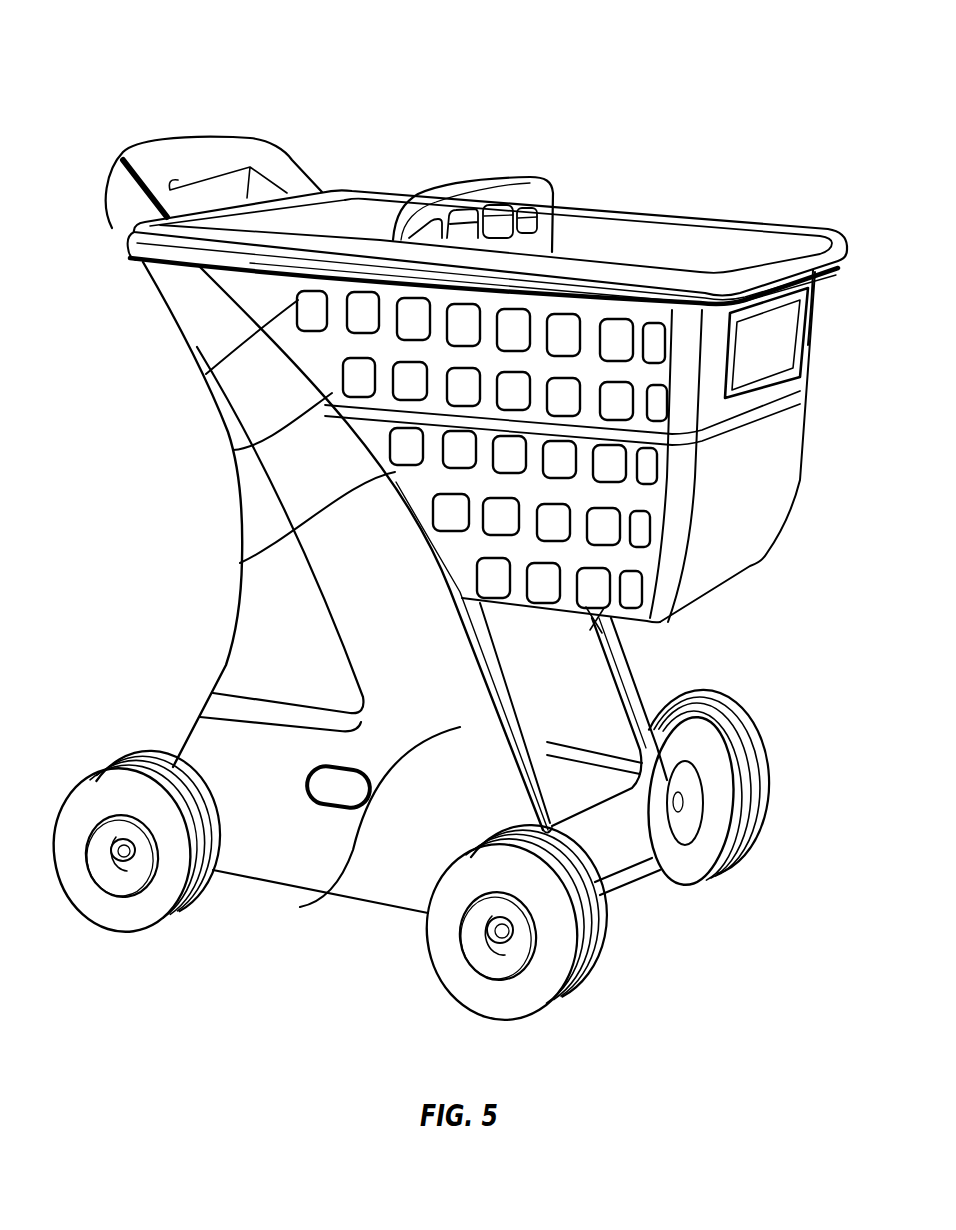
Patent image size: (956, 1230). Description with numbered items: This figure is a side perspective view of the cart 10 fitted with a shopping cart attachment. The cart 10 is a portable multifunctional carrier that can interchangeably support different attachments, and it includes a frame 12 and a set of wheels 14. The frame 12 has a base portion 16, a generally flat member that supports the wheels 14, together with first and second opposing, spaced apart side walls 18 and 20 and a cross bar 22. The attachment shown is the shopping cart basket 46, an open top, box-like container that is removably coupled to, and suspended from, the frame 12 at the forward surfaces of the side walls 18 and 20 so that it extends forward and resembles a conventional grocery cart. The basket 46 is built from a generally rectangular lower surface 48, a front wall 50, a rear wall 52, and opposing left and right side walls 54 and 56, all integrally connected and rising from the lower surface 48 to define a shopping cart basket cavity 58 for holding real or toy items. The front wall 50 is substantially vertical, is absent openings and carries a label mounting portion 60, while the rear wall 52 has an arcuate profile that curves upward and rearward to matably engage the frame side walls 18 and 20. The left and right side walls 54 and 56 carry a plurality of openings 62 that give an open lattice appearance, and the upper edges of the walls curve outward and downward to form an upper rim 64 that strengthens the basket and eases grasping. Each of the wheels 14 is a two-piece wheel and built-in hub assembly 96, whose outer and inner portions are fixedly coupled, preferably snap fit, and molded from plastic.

The cart 10 is at (150, 42).
The frame 12 is at (253, 632).
The wheels 14 is at (93, 767).
The base portion 16 is at (597, 882).
The first side wall 18 is at (360, 882).
The second side wall 20 is at (620, 653).
The cross bar 22 is at (155, 158).
The shopping cart basket 46 is at (601, 629).
The lower surface 48 is at (727, 586).
The front wall 50 is at (780, 530).
The rear wall 52 is at (234, 450).
The left side wall 54 is at (816, 328).
The right side wall 56 is at (241, 563).
The shopping cart basket cavity 58 is at (738, 215).
The label mounting portion 60 is at (780, 362).
The openings 62 is at (207, 375).
The upper rim 64 is at (190, 262).
The two-piece wheel and built-in hub assembly 96 is at (723, 737).